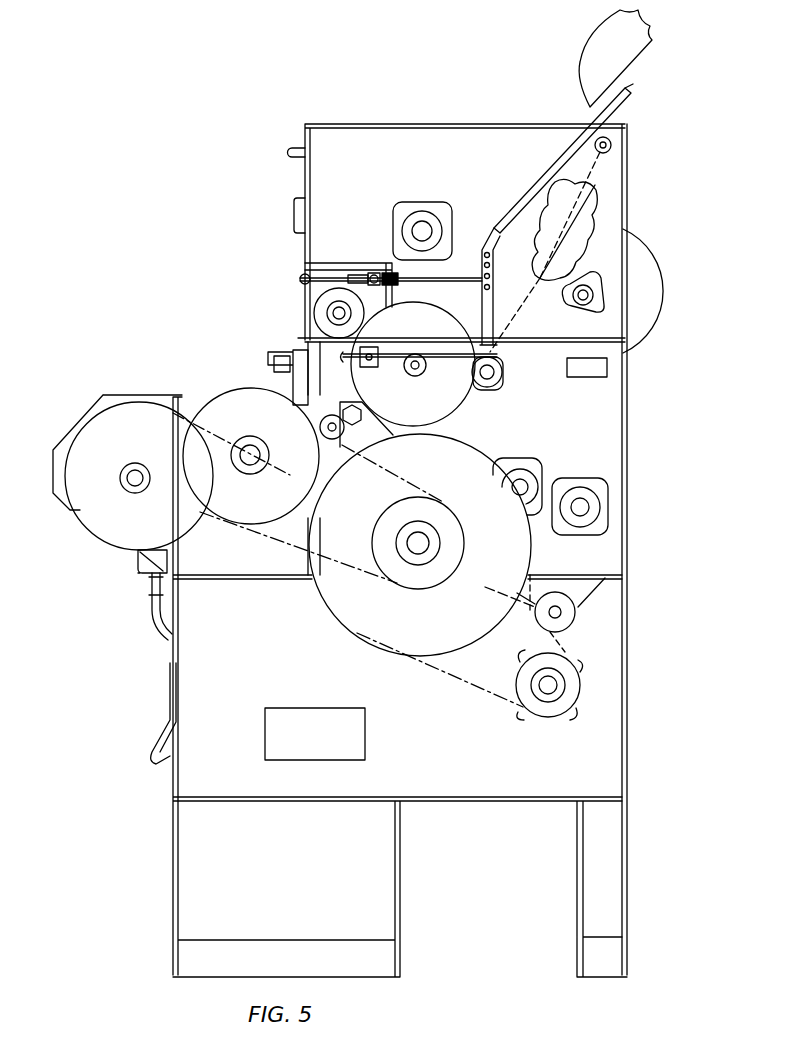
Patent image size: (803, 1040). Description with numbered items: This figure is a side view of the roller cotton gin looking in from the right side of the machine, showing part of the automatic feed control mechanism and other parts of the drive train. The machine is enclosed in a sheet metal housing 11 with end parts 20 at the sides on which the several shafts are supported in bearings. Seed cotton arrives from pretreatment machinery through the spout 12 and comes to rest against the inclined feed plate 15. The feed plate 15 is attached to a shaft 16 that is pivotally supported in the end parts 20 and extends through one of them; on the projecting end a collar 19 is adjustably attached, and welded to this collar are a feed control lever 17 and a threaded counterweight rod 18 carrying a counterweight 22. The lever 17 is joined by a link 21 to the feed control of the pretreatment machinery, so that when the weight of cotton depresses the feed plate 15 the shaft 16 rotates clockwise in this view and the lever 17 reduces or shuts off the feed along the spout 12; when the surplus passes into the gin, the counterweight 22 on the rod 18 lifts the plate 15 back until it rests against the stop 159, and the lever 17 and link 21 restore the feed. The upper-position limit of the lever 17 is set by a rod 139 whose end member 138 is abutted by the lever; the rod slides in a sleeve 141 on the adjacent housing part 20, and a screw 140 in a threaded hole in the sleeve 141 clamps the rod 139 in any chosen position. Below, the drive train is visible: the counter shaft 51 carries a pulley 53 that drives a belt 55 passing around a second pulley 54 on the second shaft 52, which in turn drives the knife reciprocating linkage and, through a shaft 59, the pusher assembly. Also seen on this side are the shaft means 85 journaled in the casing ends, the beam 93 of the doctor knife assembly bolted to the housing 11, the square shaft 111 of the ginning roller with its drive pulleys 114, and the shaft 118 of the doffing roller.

The sheet metal housing 11 is at (170, 778).
The spout 12 is at (580, 60).
The inclined feed plate 15 is at (564, 229).
The shaft 16 is at (501, 366).
The feed control lever 17 is at (494, 292).
The threaded counterweight rod 18 is at (352, 366).
The collar 19 is at (500, 390).
The end parts 20 is at (600, 432).
The link 21 is at (632, 96).
The counterweight 22 is at (362, 402).
The counter shaft 51 is at (558, 690).
The second shaft 52 is at (426, 556).
The pulley 53 is at (548, 718).
The second pulley 54 is at (343, 628).
The belt 55 is at (452, 683).
The shaft 59 is at (578, 516).
The shaft means 85 is at (532, 478).
The beam 93 is at (295, 345).
The square shaft 111 is at (254, 462).
The drive pulleys 114 is at (246, 388).
The shaft 118 is at (132, 490).
The end member 138 is at (482, 276).
The rod 139 is at (446, 282).
The screw 140 is at (376, 272).
The sleeve 141 is at (392, 283).
The stop 159 is at (610, 140).